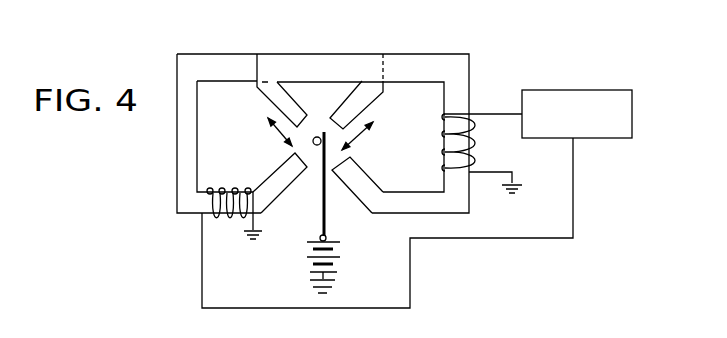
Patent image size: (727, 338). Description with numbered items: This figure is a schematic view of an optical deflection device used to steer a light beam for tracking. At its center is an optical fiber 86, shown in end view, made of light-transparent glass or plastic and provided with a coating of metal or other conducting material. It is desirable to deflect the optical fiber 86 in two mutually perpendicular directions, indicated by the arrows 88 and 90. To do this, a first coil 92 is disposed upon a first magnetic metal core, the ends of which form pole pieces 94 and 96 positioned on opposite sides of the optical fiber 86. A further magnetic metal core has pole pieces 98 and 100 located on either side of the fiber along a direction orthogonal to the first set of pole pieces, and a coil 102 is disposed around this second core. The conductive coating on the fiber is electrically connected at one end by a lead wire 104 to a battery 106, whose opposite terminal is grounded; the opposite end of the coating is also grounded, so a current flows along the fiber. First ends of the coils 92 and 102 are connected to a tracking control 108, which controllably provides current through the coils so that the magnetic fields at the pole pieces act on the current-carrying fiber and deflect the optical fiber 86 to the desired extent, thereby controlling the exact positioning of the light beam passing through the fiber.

The optical fiber 86 is at (319, 137).
The arrow 88 is at (274, 128).
The arrow 90 is at (360, 134).
The first coil 92 is at (238, 188).
The pole piece 94 is at (383, 93).
The pole piece 96 is at (280, 193).
The pole piece 98 is at (298, 98).
The pole piece 100 is at (367, 174).
The coil 102 is at (473, 147).
The lead wire 104 is at (327, 217).
The battery 106 is at (340, 263).
The tracking control 108 is at (583, 88).